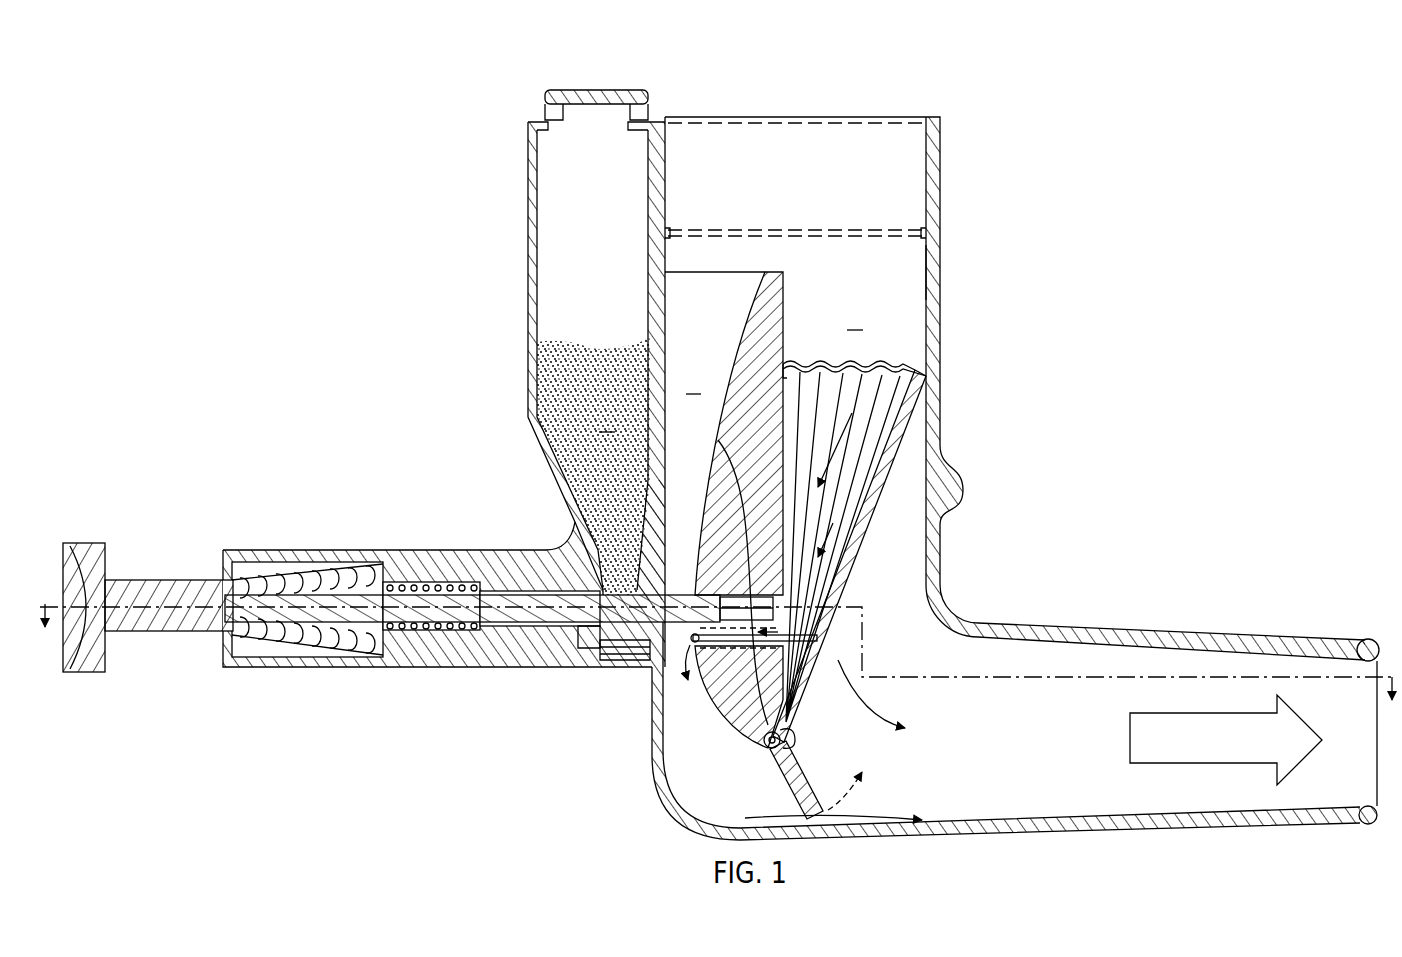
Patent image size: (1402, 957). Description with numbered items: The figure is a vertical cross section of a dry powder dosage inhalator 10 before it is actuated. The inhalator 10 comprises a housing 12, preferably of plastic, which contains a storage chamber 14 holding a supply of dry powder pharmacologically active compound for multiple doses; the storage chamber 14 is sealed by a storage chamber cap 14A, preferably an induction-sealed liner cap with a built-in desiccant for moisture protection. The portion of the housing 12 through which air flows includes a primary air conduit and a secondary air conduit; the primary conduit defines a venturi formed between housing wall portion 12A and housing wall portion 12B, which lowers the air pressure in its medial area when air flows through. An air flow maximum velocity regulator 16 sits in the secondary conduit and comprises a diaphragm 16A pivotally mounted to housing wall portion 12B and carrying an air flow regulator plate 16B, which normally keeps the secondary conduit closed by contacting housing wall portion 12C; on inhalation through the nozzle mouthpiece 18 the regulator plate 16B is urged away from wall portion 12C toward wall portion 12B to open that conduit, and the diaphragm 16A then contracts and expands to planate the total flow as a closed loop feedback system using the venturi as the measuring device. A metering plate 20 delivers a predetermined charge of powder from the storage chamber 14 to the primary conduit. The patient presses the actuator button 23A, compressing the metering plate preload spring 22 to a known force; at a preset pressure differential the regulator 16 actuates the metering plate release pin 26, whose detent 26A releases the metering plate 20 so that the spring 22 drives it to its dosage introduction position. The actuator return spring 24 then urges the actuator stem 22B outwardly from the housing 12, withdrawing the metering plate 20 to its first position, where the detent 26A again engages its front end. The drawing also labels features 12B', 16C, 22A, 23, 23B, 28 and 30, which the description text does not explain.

The dry powder dosage inhalator 10 is at (720, 450).
The housing 12 is at (943, 215).
The housing wall portion 12A is at (668, 332).
The housing wall portion 12B is at (753, 419).
The wall flange 12B' is at (741, 688).
The housing wall portion 12C is at (924, 272).
The storage chamber 14 is at (606, 254).
The storage chamber cap 14A is at (577, 90).
The air flow maximum velocity regulator 16 is at (906, 538).
The diaphragm 16A is at (850, 364).
The air flow regulator plate 16B is at (906, 413).
The pivot 16C is at (760, 745).
The nozzle mouthpiece 18 is at (1352, 638).
The metering plate 20 is at (550, 616).
The metering plate preload spring 22 is at (420, 568).
The housing bore shoulder 22A is at (588, 645).
The actuator stem 22B is at (615, 655).
The plunger assembly 23 is at (148, 592).
The actuator button 23A is at (90, 675).
The plunger shaft 23B is at (170, 633).
The actuator return spring 24 is at (322, 640).
The metering plate release pin 26 is at (768, 715).
The detent 26A is at (722, 446).
The upper chamber 28 is at (805, 194).
The actuating lever 30 is at (803, 762).